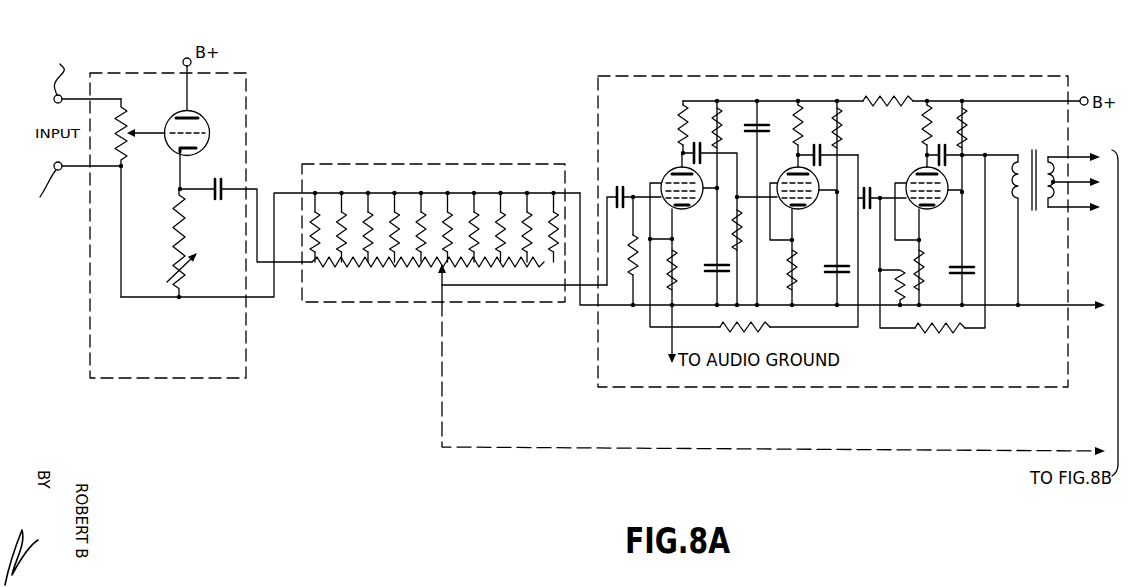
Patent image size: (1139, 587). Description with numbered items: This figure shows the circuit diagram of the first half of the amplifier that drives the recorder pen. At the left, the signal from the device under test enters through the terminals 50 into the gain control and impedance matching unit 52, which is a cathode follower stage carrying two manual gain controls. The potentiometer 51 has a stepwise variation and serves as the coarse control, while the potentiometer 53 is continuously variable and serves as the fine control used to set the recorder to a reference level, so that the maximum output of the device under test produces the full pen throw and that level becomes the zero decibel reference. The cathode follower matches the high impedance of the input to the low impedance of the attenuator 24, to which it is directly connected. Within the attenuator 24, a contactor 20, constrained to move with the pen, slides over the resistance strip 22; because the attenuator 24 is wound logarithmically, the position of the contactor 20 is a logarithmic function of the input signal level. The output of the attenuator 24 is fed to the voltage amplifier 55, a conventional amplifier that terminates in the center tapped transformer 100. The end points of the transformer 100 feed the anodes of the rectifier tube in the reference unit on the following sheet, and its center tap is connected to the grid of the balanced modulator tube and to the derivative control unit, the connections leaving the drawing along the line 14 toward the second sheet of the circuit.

The terminals 50 is at (74, 131).
The potentiometer 51 is at (130, 120).
The gain control and impedance matching unit 52 is at (192, 380).
The potentiometer 53 is at (173, 266).
The contactor 20 is at (437, 268).
The resistance strip 22 is at (388, 268).
The attenuator 24 is at (396, 303).
The voltage amplifier 55 is at (860, 388).
The output line to FIG. 8B 14 is at (746, 451).
The center tapped transformer 100 is at (1032, 150).